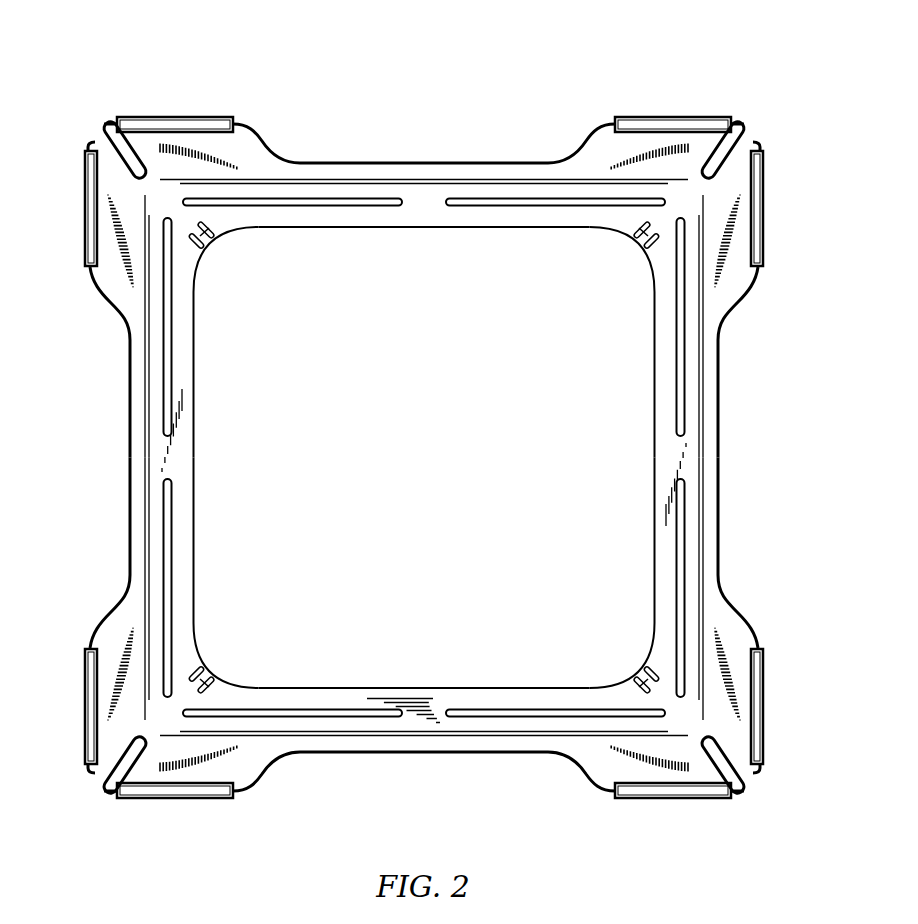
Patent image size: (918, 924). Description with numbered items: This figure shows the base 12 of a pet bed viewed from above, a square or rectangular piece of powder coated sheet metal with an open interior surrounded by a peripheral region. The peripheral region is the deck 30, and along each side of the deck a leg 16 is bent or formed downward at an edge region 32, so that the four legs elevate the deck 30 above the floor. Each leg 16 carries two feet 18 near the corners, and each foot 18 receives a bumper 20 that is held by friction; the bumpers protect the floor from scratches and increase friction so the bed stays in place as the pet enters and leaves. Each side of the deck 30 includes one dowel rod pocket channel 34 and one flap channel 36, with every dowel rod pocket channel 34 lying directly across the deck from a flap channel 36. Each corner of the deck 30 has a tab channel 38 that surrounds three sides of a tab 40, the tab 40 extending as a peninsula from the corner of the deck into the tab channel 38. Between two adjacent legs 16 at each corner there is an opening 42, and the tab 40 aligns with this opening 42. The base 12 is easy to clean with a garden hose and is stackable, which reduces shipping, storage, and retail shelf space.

The base 12 is at (100, 59).
The leg 16 is at (426, 167).
The foot 18 is at (256, 143).
The bumper 20 is at (174, 117).
The deck 30 is at (412, 214).
The edge region 32 is at (382, 181).
The dowel rod pocket channel 34 is at (548, 206).
The flap channel 36 is at (290, 206).
The tab channel 38 is at (212, 240).
The tab 40 is at (212, 250).
The opening 42 is at (105, 137).